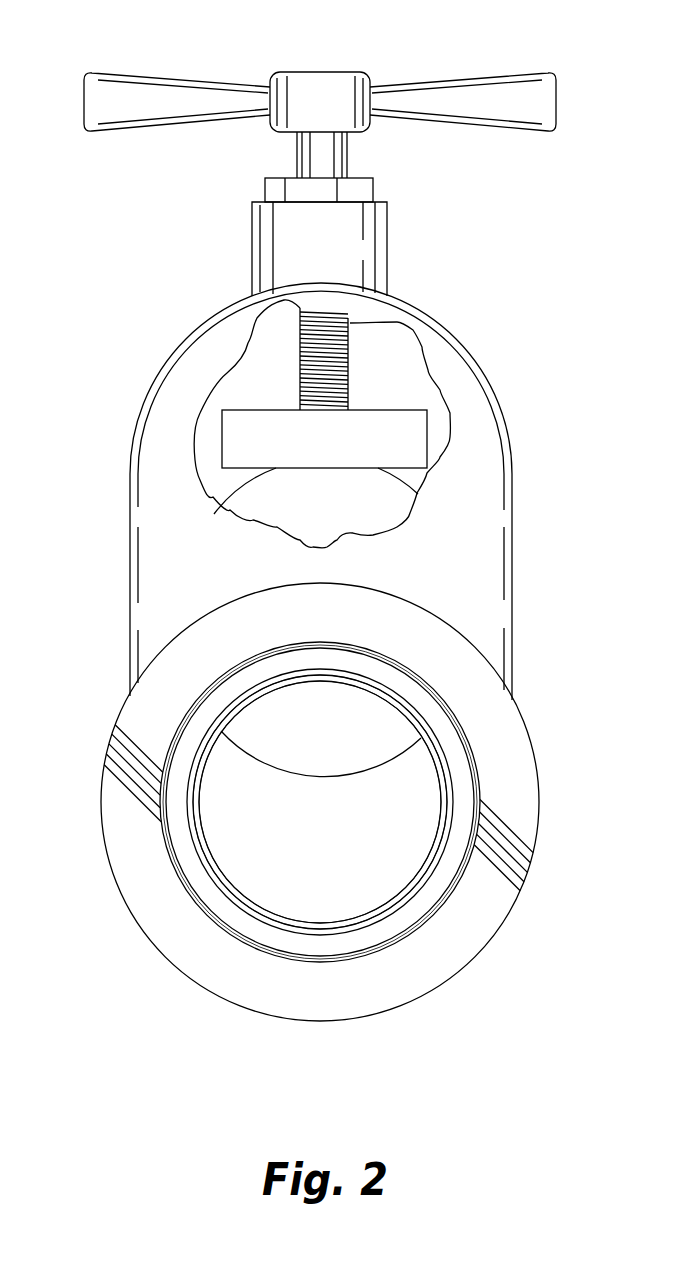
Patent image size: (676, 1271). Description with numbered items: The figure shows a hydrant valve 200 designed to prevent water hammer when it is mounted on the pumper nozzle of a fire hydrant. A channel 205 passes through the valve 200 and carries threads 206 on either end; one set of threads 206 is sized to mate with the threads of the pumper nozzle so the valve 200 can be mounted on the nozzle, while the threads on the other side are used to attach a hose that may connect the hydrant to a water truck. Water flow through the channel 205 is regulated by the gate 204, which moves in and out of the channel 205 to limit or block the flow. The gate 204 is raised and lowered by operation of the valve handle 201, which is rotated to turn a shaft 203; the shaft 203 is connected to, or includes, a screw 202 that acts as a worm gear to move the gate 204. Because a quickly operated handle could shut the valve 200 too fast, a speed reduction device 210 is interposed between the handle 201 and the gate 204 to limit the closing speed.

The valve 200 is at (96, 426).
The valve handle 201 is at (150, 95).
The screw 202 is at (348, 360).
The shaft 203 is at (332, 150).
The gate 204 is at (352, 700).
The channel 205 is at (387, 798).
The threads 206 is at (201, 888).
The speed reduction device 210 is at (344, 452).